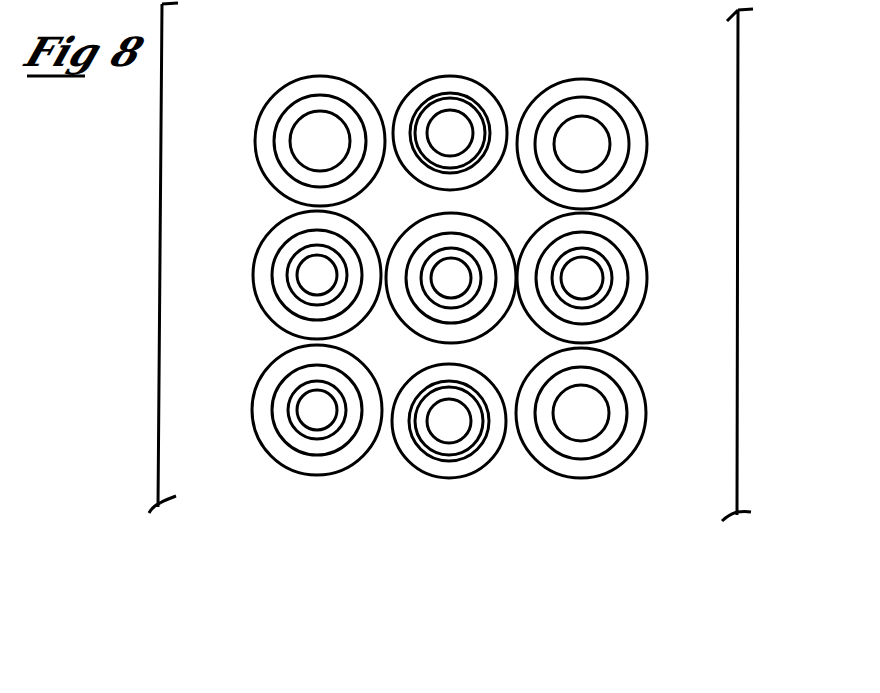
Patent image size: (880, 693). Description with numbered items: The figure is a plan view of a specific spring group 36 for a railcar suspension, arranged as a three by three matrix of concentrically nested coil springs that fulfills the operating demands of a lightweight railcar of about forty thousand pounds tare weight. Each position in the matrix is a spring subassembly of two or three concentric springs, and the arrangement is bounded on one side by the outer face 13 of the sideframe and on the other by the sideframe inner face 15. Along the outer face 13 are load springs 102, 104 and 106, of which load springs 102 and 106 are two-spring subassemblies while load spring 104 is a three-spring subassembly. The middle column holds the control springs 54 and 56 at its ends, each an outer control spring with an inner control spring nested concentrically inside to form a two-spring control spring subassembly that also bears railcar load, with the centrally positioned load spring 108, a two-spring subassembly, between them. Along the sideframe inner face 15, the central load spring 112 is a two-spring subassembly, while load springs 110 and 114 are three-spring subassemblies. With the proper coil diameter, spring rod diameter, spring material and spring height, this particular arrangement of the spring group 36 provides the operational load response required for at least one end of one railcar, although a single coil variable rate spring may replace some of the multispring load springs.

The spring group 36 is at (426, 27).
The sideframe inner face 15 is at (160, 155).
The outer face 13 is at (740, 127).
The outer control spring 54 is at (479, 80).
The outer control spring 56 is at (478, 470).
The load spring 102 is at (625, 95).
The load spring 104 is at (633, 240).
The load spring 106 is at (632, 378).
The load spring 108 is at (470, 217).
The load spring 110 is at (292, 78).
The load spring 112 is at (268, 226).
The load spring 114 is at (268, 372).